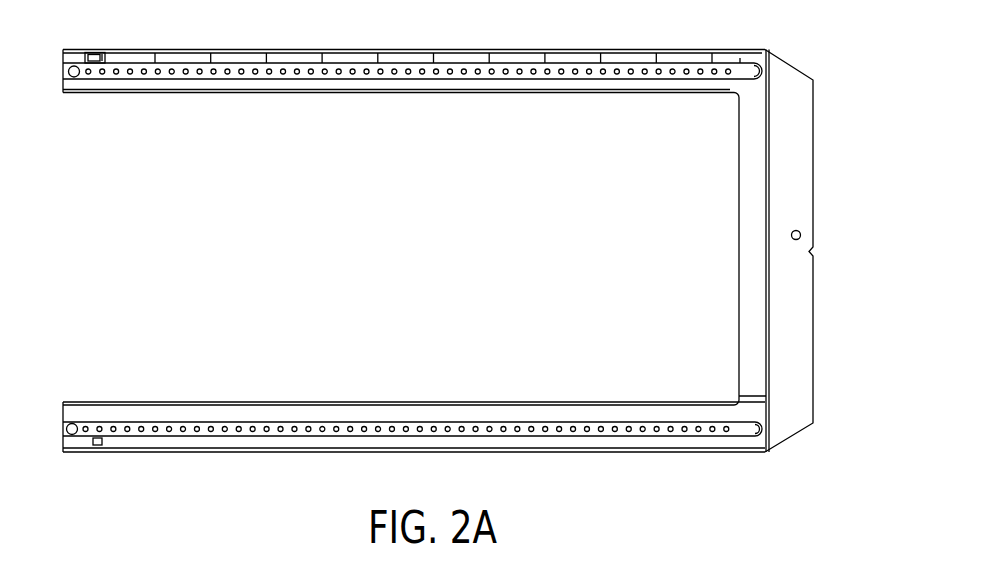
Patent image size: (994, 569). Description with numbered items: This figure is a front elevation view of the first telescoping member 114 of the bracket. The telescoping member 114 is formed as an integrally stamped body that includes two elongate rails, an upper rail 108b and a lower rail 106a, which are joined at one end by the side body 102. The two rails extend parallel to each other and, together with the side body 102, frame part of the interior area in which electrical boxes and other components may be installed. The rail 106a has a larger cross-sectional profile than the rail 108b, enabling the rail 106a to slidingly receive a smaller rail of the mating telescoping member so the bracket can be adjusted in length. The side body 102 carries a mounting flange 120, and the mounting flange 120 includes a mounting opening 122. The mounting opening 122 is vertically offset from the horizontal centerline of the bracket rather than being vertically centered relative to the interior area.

The side body 102 is at (758, 370).
The rail 106a is at (393, 443).
The rail 108b is at (542, 70).
The telescoping member 114 is at (823, 81).
The mounting flange 120 is at (788, 155).
The mounting opening 122 is at (790, 232).